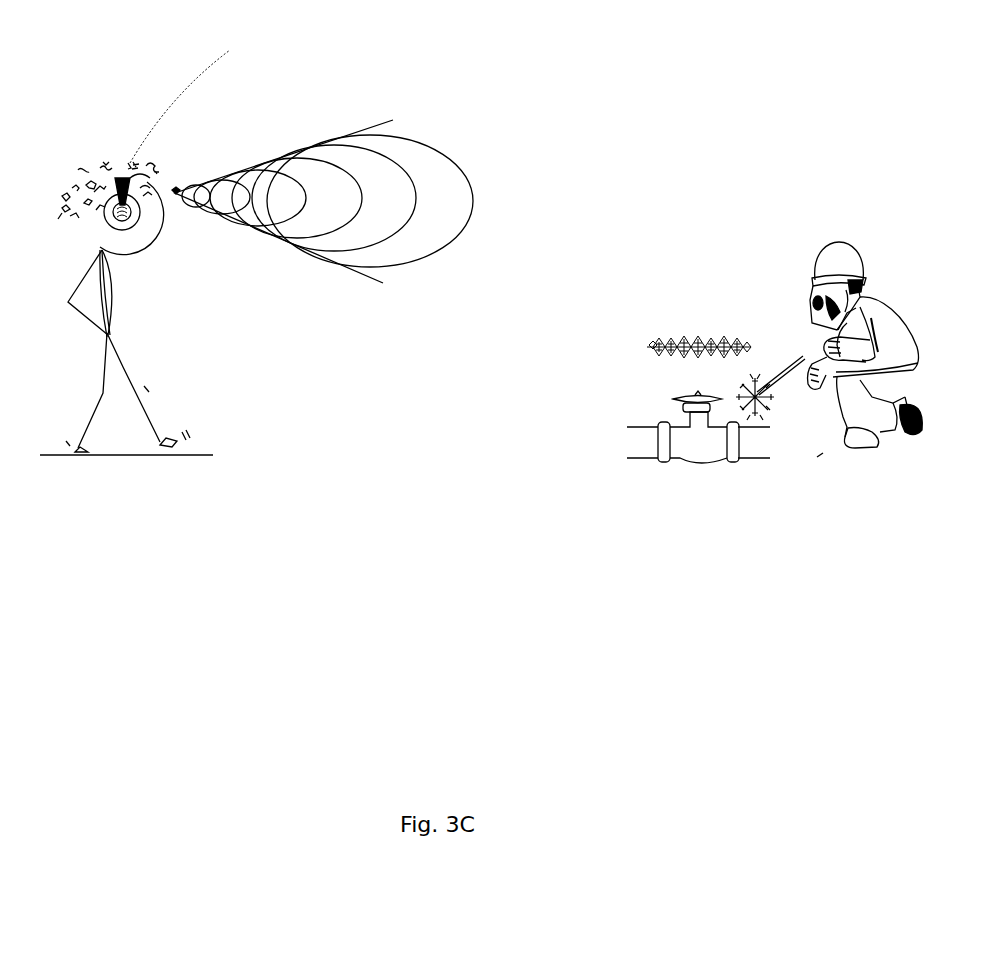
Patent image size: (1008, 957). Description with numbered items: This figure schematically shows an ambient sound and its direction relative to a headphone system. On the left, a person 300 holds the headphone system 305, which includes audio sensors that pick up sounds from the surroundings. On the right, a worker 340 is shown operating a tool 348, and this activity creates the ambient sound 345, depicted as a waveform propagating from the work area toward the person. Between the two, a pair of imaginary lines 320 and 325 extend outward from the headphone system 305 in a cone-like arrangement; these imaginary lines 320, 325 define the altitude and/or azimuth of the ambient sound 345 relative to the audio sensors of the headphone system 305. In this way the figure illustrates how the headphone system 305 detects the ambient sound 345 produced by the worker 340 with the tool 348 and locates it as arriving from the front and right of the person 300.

The person 300 is at (105, 358).
The headphone system 305 is at (83, 160).
The imaginary line 320 is at (252, 248).
The imaginary line 325 is at (287, 138).
The worker 340 is at (823, 453).
The ambient sound 345 is at (655, 337).
The tool 348 is at (765, 350).